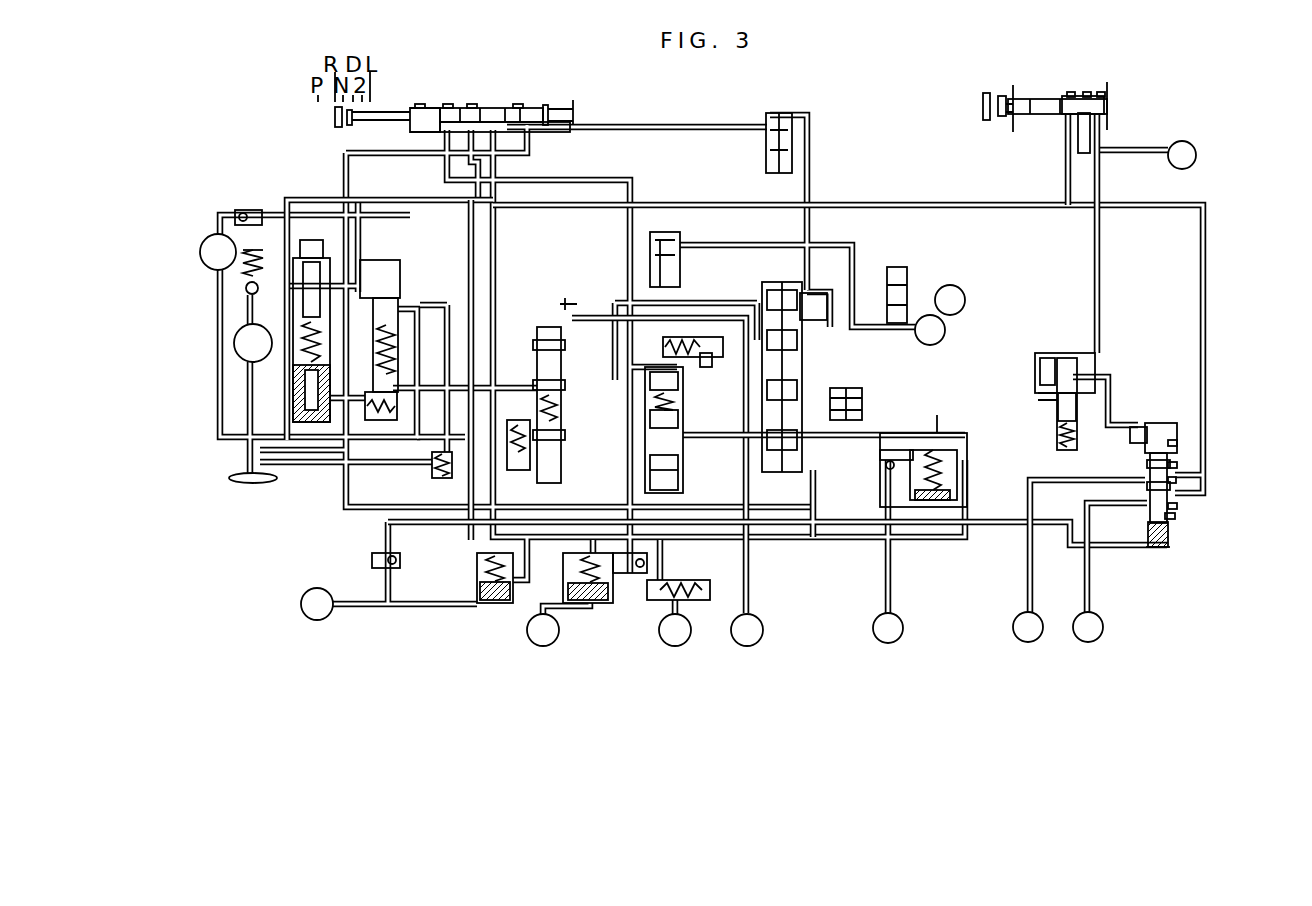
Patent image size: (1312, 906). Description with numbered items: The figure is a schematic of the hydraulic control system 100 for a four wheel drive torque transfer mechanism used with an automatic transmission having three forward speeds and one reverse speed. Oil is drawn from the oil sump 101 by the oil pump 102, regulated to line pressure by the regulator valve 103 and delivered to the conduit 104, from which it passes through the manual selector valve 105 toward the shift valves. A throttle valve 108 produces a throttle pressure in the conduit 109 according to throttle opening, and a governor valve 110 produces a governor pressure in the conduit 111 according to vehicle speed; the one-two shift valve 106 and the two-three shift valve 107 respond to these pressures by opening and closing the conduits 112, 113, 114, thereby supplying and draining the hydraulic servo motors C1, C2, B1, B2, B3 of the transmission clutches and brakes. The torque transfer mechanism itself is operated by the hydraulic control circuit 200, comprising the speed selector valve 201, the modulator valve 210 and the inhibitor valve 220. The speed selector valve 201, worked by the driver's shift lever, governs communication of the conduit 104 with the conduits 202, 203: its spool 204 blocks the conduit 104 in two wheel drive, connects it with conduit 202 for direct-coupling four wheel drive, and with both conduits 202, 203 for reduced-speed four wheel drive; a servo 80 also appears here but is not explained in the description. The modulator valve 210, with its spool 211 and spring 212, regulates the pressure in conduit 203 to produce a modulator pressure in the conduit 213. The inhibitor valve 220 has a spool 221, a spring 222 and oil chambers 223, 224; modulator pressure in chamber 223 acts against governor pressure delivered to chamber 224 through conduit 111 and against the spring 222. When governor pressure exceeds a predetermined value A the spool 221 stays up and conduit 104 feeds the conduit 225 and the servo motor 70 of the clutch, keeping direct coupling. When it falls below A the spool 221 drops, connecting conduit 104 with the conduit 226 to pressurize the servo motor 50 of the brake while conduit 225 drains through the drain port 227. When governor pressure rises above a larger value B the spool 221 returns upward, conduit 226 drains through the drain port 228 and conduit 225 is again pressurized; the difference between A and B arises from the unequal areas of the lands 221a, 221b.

The servo motor 50 is at (1013, 629).
The servo motor 70 is at (1078, 636).
The hydraulic servo 80 is at (1182, 142).
The hydraulic control system 100 is at (838, 157).
The oil sump 101 is at (257, 485).
The oil pump 102 is at (240, 348).
The regulator valve 103 is at (311, 238).
The conduit 104 is at (400, 198).
The manual selector valve 105 is at (445, 102).
The 1-2 shift valve 106 is at (783, 468).
The 2-3 shift valve 107 is at (694, 480).
The throttle valve 108 is at (543, 322).
The conduit 109 is at (467, 345).
The governor valve 110 is at (868, 394).
The conduit 111 is at (840, 500).
The conduit 112 is at (727, 433).
The conduit 113 is at (649, 471).
The conduit 114 is at (750, 590).
The hydraulic control circuit 200 is at (978, 166).
The speed selector valve 201 is at (1039, 95).
The conduit 202 is at (1133, 150).
The conduit 203 is at (1100, 180).
The spool 204 is at (1057, 103).
The modulator valve 210 is at (1044, 371).
The spool 211 is at (1057, 403).
The spring 212 is at (1055, 437).
The conduit 213 is at (1108, 378).
The inhibitor valve 220 is at (1210, 482).
The spool 221 is at (1177, 506).
The land 221a is at (1177, 441).
The land 221b is at (1177, 465).
The spring 222 is at (1170, 546).
The oil chamber 223 is at (1167, 425).
The oil chamber 224 is at (1156, 548).
The conduit 225 is at (1087, 578).
The conduit 226 is at (1027, 580).
The drain port 227 is at (1172, 519).
The drain port 228 is at (1176, 480).
The hydraulic servo motor B1 is at (763, 630).
The hydraulic servo motor B2 is at (903, 628).
The hydraulic servo motor B3 is at (945, 330).
The hydraulic servo motor C1 is at (330, 615).
The hydraulic servo motor C2 is at (560, 637).